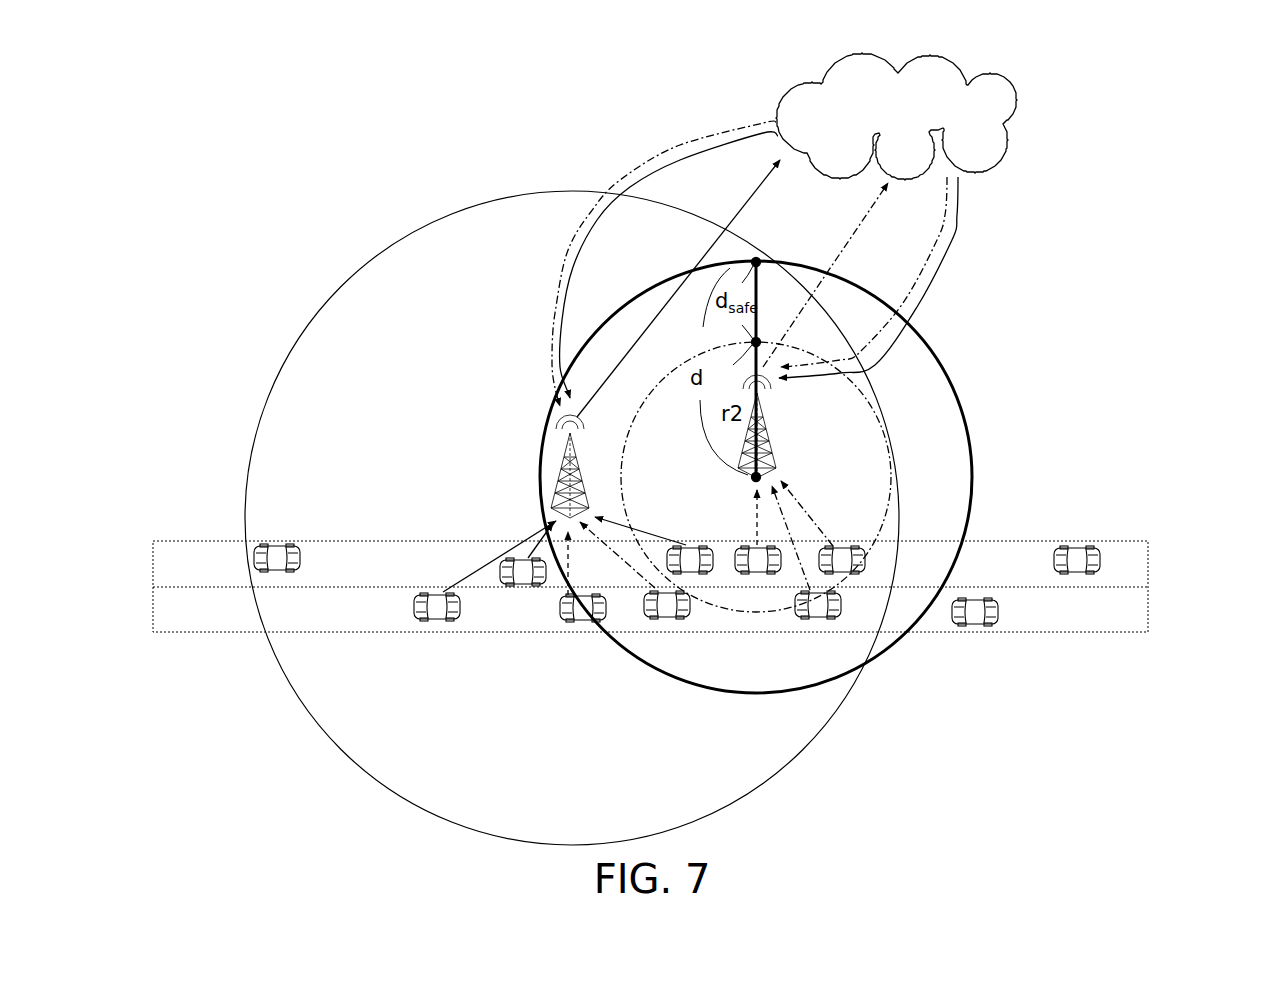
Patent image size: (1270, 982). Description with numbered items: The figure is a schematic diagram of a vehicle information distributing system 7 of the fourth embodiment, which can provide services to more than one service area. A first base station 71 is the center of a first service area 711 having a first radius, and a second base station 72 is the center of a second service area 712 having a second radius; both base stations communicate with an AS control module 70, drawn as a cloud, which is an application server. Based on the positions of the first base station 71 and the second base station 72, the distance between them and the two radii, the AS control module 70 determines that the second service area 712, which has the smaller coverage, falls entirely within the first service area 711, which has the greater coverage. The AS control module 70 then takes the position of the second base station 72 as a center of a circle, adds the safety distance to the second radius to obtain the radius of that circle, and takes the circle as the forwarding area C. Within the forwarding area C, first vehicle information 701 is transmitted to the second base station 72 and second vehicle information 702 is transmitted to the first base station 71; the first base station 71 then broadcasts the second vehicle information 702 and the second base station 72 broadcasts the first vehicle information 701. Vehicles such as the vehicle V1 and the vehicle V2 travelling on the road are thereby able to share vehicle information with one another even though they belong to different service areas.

The vehicle information distributing system 7 is at (1160, 150).
The AS control module 70 is at (940, 62).
The first vehicle information 701 is at (743, 197).
The second vehicle information 702 is at (660, 152).
The first base station 71 is at (563, 465).
The second base station 72 is at (773, 440).
The first service area 711 is at (327, 738).
The second service area 712 is at (875, 390).
The forwarding area C is at (975, 478).
The vehicle V1 is at (277, 544).
The vehicle V2 is at (842, 545).